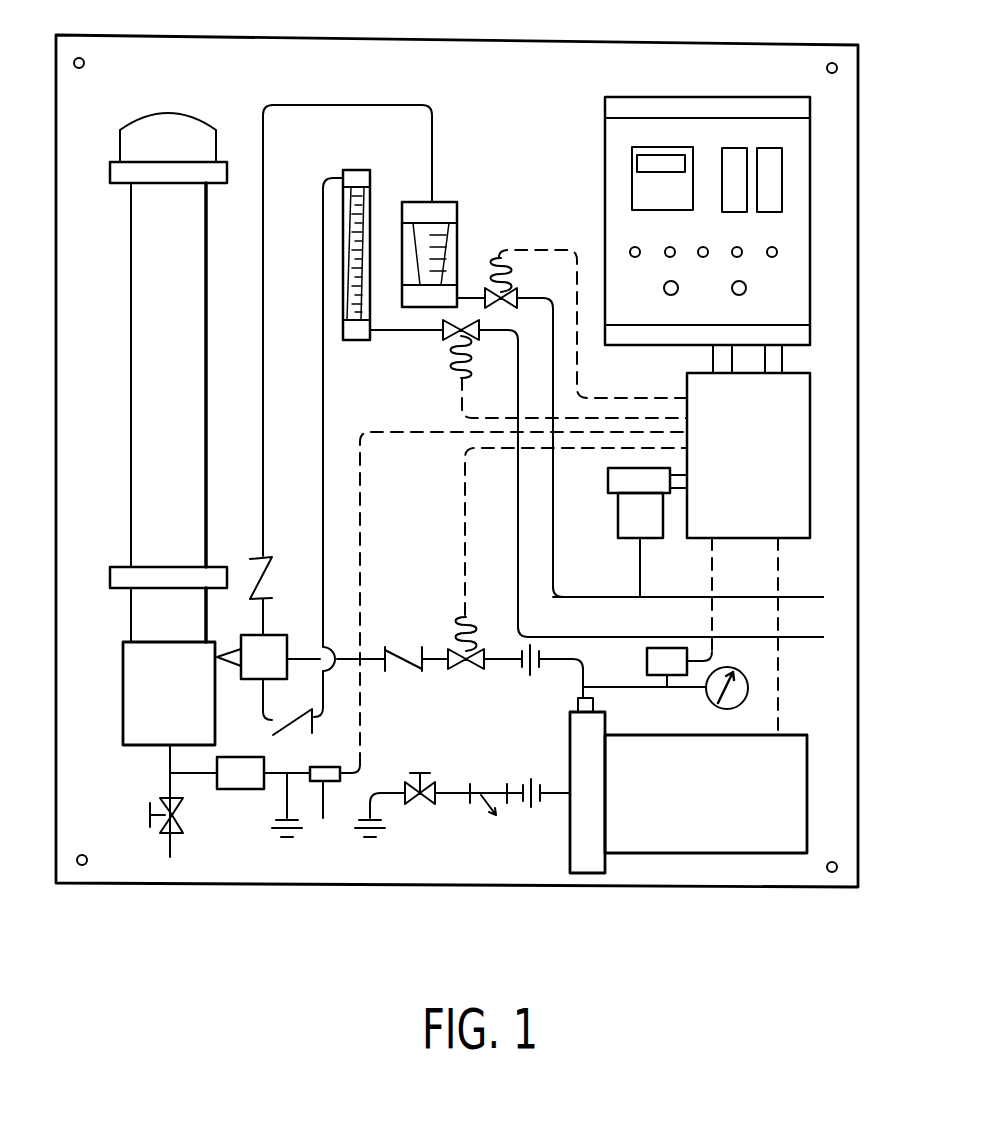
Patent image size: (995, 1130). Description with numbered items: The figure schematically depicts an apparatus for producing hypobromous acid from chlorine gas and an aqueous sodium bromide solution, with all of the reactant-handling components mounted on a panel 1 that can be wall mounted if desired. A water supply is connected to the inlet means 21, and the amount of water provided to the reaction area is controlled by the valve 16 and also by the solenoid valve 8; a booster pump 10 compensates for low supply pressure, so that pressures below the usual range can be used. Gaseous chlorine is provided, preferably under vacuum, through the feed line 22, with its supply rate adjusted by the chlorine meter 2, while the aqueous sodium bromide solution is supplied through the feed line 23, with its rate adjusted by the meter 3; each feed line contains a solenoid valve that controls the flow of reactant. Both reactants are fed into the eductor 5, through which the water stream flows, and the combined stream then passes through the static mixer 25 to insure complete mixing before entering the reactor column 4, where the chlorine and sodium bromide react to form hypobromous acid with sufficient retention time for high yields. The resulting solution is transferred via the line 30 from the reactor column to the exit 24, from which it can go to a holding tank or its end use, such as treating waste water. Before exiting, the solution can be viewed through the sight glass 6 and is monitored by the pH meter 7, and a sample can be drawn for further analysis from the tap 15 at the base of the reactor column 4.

The panel 1 is at (733, 62).
The chlorine meter 2 is at (458, 212).
The meter 3 is at (374, 184).
The reactor column 4 is at (150, 300).
The eductor 5 is at (276, 634).
The sight glass 6 is at (238, 790).
The pH meter 7 is at (498, 645).
The solenoid valve 8 is at (448, 675).
The booster pump 10 is at (702, 842).
The tap 15 is at (170, 842).
The valve 16 is at (432, 783).
The inlet means 21 is at (373, 843).
The feed line 22 is at (808, 596).
The feed line 23 is at (808, 640).
The exit 24 is at (282, 840).
The static mixer 25 is at (230, 667).
The line 30 is at (165, 758).